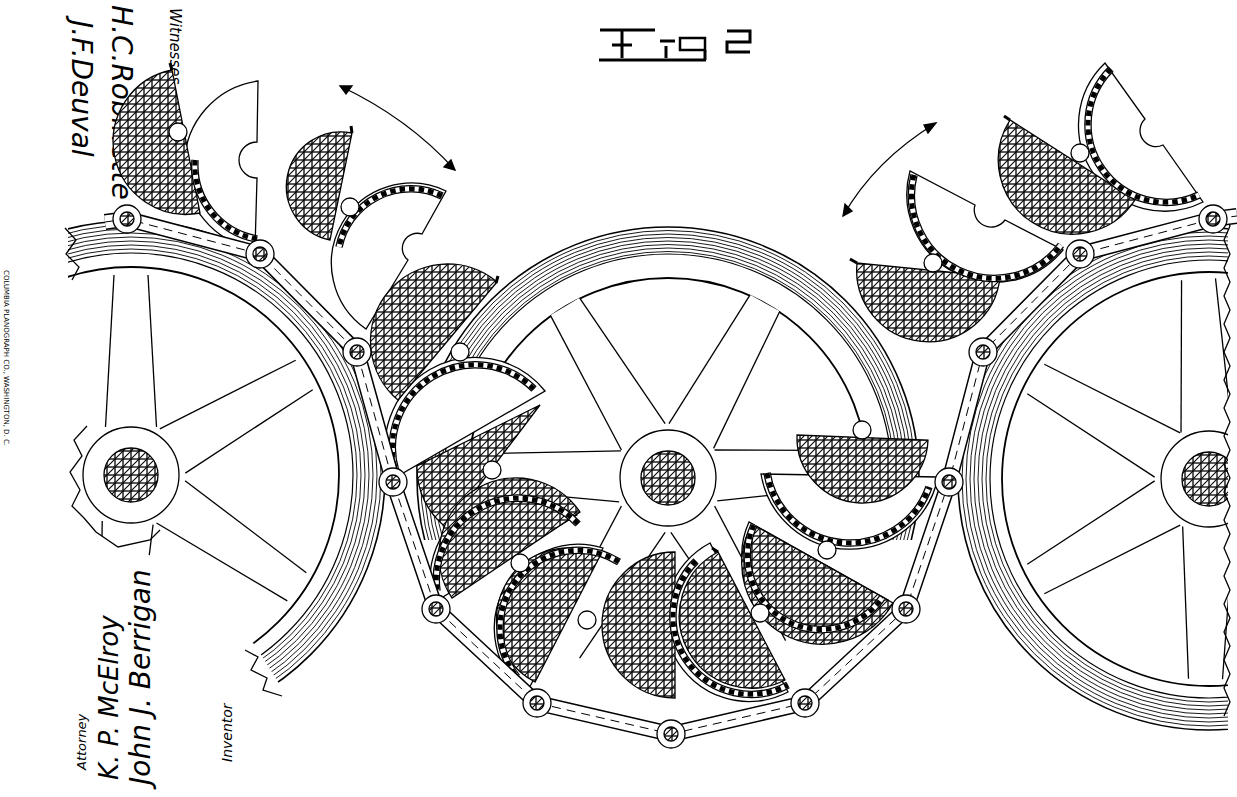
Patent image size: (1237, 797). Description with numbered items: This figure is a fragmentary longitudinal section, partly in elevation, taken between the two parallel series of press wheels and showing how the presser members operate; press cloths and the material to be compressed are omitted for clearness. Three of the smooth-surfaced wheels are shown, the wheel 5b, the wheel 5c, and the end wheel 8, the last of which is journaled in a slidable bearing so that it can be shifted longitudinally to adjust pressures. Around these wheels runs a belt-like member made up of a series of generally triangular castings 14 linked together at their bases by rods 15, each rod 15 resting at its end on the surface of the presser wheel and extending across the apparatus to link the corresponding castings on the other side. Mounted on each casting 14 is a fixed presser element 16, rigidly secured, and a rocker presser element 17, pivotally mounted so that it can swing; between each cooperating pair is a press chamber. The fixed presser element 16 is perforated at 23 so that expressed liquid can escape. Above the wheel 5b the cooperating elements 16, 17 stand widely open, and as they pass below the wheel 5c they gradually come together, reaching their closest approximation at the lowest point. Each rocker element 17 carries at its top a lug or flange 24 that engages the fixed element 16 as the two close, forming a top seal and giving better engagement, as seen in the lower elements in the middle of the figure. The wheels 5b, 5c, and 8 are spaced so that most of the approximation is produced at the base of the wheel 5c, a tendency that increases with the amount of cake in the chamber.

The wheel 5b is at (1072, 312).
The wheel 5c is at (662, 234).
The end wheel 8 is at (244, 293).
The castings 14 is at (240, 115).
The rod 15 is at (352, 353).
The fixed presser element 16 is at (444, 197).
The rocker presser element 17 is at (303, 164).
The perforations 23 is at (408, 200).
The lug or flange 24 is at (494, 284).